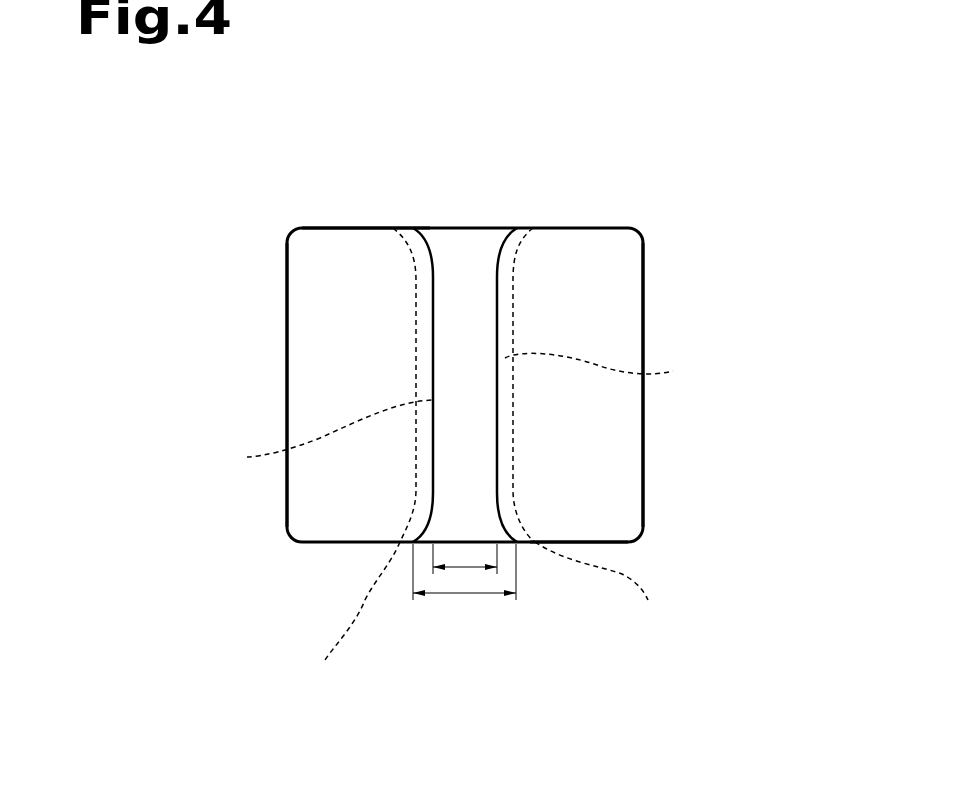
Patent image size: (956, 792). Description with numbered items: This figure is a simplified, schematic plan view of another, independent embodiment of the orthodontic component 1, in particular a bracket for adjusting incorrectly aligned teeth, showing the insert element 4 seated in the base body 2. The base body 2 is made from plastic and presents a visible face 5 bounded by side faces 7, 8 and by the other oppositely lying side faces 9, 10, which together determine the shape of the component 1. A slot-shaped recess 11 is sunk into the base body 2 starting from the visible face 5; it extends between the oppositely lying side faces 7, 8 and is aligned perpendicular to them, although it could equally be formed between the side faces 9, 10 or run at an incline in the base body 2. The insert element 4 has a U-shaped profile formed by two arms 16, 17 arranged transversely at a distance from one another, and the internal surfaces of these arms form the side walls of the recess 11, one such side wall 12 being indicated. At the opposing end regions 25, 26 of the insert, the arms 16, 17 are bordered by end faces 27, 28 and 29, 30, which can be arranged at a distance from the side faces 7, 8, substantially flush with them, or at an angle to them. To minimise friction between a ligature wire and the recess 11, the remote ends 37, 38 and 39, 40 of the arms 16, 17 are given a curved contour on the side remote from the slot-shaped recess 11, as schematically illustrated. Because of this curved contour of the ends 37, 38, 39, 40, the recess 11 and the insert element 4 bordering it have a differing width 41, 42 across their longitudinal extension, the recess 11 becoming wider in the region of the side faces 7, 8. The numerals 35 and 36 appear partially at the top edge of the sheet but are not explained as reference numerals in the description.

The orthodontic component 1 is at (685, 318).
The base body 2 is at (600, 490).
The insert element 4 is at (458, 435).
The visible face 5 is at (338, 322).
The side face 7 is at (612, 544).
The side face 8 is at (326, 222).
The side face 9 is at (645, 408).
The side face 10 is at (287, 357).
The slot-shaped recess 11 is at (465, 342).
The side wall 12 is at (490, 322).
The arm 16 is at (606, 370).
The arm 17 is at (325, 438).
The end region 25 is at (523, 580).
The end region 26 is at (479, 192).
The end face 27 is at (603, 587).
The end face 28 is at (525, 228).
The end face 29 is at (347, 617).
The end face 30 is at (393, 228).
The edge 35 is at (518, 9).
The edge 36 is at (410, 9).
The remote end 37 is at (547, 570).
The remote end 38 is at (545, 210).
The remote end 39 is at (368, 556).
The remote end 40 is at (400, 200).
The width 41 is at (463, 568).
The width 42 is at (477, 594).